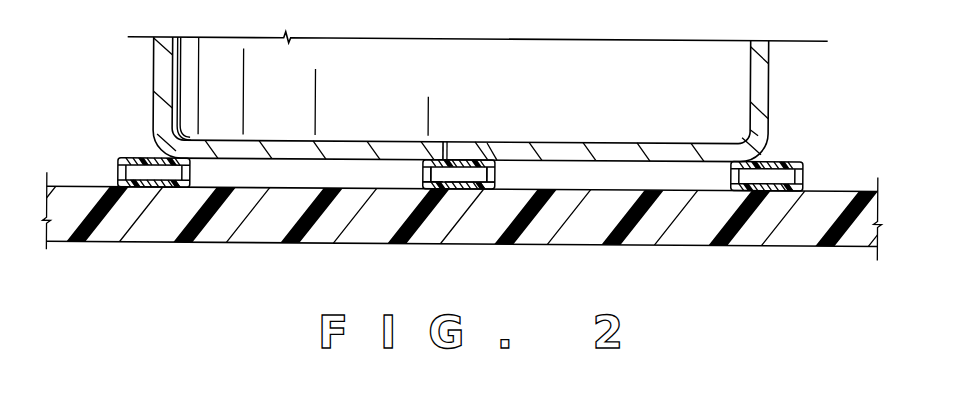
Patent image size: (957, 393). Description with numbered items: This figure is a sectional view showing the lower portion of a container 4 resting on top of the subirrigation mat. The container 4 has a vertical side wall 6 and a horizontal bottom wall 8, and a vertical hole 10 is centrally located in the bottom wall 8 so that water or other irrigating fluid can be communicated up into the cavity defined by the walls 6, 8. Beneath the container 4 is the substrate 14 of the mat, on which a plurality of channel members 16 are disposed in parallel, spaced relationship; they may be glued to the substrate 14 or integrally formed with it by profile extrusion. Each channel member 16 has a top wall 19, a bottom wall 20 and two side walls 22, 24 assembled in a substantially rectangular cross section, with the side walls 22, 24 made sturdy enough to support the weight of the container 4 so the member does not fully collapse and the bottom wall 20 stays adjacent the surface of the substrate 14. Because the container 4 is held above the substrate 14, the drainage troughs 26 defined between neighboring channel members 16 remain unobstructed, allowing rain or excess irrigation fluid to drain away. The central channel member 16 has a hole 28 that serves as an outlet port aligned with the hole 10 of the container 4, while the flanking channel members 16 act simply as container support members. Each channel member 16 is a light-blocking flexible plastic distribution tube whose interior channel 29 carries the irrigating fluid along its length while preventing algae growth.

The container 4 is at (781, 55).
The vertical side wall 6 is at (757, 80).
The horizontal bottom wall 8 is at (670, 152).
The vertical hole 10 is at (464, 158).
The substrate 14 is at (227, 225).
The channel member 16 is at (125, 148).
The top wall 19 is at (484, 158).
The bottom wall 20 is at (455, 189).
The side wall 22 is at (427, 170).
The side wall 24 is at (497, 170).
The drainage trough 26 is at (652, 175).
The hole 28 is at (458, 158).
The interior channel 29 is at (423, 189).